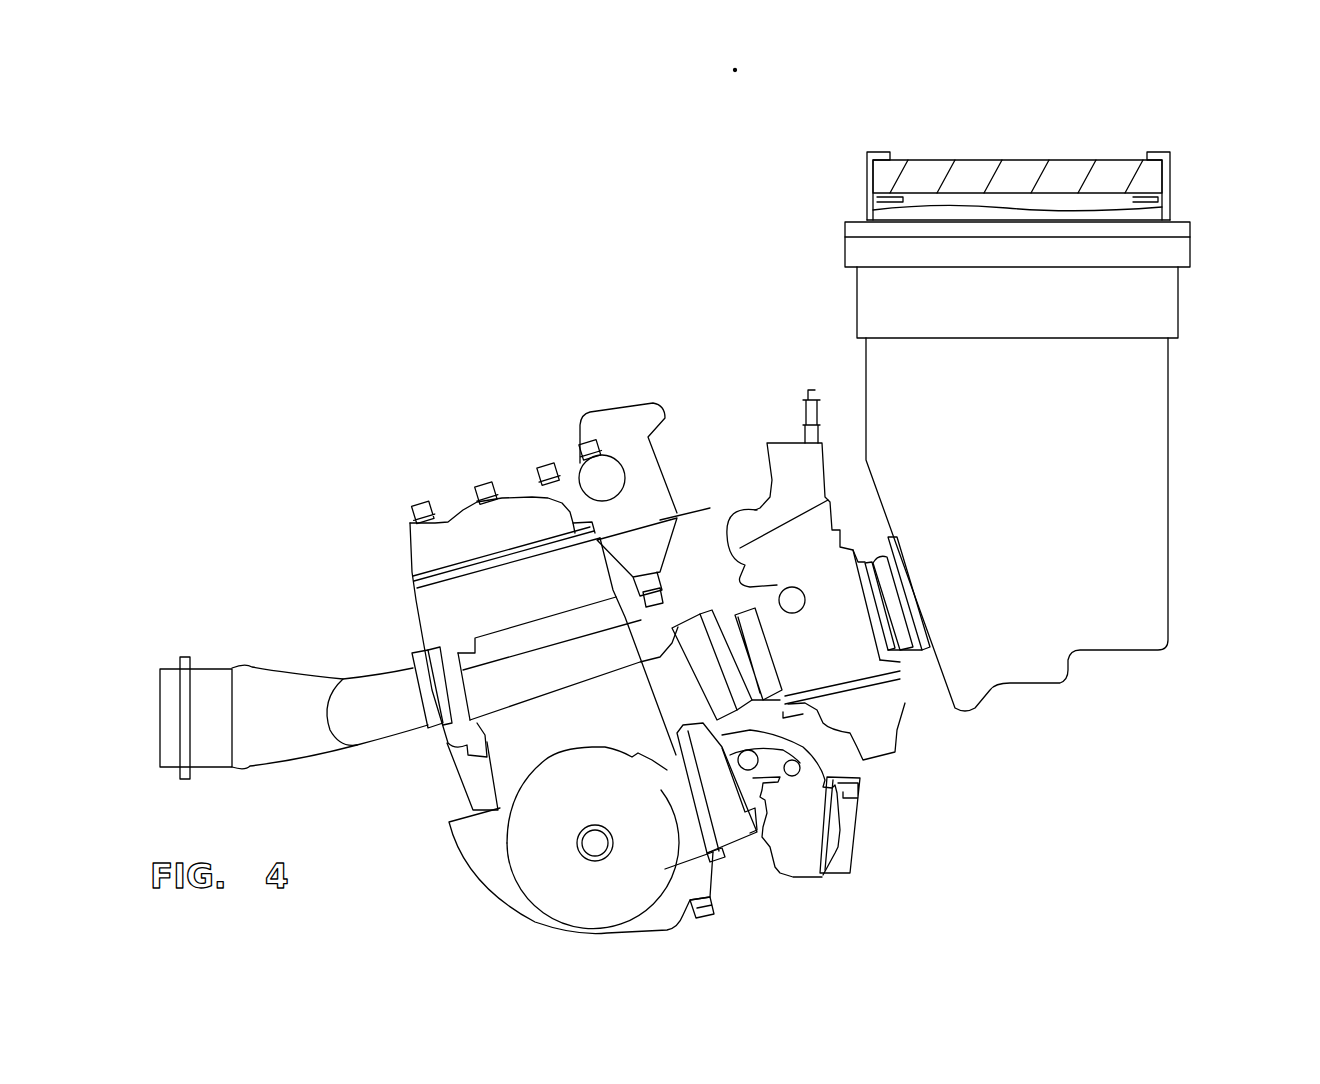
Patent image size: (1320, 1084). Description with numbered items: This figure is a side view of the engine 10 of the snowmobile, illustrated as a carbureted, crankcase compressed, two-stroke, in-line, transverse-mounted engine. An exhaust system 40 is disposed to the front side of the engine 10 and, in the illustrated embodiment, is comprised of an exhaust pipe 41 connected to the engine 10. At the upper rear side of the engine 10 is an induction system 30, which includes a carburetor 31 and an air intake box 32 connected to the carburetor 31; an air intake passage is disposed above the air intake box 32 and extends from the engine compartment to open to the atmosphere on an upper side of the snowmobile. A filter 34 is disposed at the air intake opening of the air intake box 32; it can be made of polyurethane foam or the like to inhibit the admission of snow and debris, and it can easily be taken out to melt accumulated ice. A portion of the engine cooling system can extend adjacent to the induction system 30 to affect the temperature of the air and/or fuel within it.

The engine 10 is at (765, 822).
The induction system 30 is at (752, 482).
The carburetor 31 is at (862, 660).
The air intake box 32 is at (1168, 452).
The filter 34 is at (1000, 160).
The exhaust system 40 is at (218, 660).
The exhaust pipe 41 is at (300, 690).